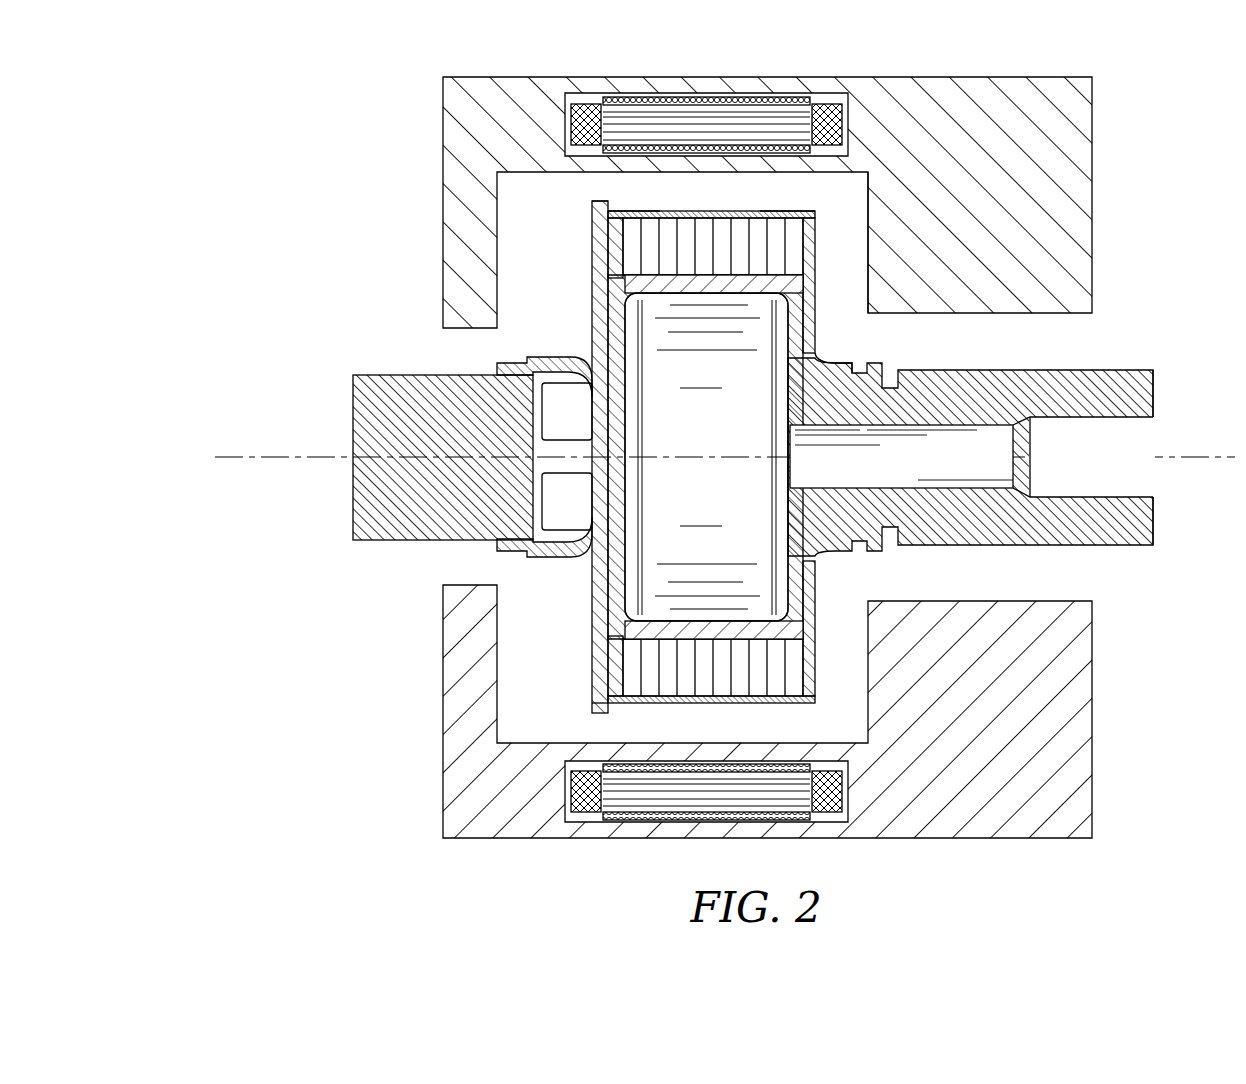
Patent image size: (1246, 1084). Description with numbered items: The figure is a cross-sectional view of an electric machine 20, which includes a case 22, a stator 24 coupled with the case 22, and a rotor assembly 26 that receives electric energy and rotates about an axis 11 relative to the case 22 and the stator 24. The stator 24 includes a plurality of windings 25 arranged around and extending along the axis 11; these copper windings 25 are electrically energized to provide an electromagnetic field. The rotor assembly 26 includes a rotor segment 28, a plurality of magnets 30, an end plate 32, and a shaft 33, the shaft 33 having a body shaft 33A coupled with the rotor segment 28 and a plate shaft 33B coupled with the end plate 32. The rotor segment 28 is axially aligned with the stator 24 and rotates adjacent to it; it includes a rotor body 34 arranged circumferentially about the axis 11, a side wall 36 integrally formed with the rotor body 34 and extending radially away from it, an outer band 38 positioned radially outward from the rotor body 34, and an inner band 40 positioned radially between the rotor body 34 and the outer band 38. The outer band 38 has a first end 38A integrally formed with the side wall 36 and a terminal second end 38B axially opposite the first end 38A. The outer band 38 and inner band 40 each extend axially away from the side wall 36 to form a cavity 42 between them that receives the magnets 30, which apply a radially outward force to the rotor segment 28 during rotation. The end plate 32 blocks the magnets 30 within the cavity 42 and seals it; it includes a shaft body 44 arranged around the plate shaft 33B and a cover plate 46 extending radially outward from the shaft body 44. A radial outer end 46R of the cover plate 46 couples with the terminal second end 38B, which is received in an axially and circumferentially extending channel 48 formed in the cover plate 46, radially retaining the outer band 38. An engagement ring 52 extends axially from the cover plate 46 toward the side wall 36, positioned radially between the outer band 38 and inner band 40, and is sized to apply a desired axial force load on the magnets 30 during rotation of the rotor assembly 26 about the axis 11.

The axis 11 is at (268, 455).
The electric machine 20 is at (224, 172).
The case 22 is at (492, 118).
The stator 24 is at (706, 414).
The windings 25 is at (753, 103).
The rotor assembly 26 is at (840, 213).
The rotor segment 28 is at (826, 352).
The plurality of magnets 30 is at (675, 250).
The end plate 32 is at (570, 335).
The shaft 33 is at (718, 406).
The body shaft 33A is at (971, 411).
The plate shaft 33B is at (442, 414).
The rotor body 34 is at (843, 362).
The side wall 36 is at (817, 257).
The outer band 38 is at (711, 349).
The first end 38A is at (798, 200).
The terminal second end 38B is at (620, 200).
The inner band 40 is at (790, 595).
The cavity 42 is at (633, 233).
The shaft body 44 is at (523, 350).
The cover plate 46 is at (496, 420).
The radial outer end 46R is at (590, 200).
The channel 48 is at (620, 703).
The engagement ring 52 is at (623, 660).